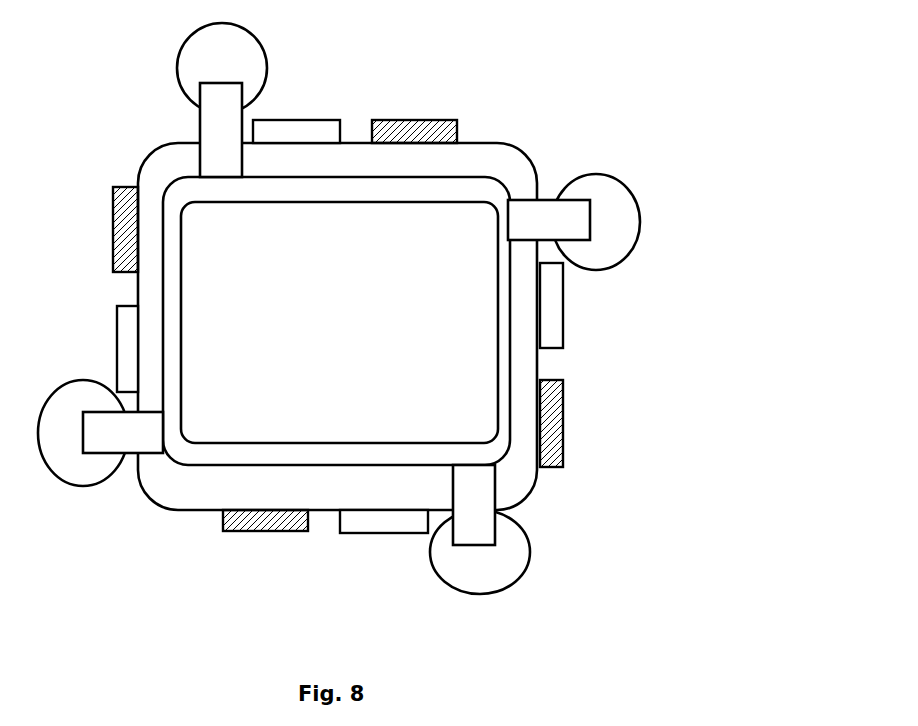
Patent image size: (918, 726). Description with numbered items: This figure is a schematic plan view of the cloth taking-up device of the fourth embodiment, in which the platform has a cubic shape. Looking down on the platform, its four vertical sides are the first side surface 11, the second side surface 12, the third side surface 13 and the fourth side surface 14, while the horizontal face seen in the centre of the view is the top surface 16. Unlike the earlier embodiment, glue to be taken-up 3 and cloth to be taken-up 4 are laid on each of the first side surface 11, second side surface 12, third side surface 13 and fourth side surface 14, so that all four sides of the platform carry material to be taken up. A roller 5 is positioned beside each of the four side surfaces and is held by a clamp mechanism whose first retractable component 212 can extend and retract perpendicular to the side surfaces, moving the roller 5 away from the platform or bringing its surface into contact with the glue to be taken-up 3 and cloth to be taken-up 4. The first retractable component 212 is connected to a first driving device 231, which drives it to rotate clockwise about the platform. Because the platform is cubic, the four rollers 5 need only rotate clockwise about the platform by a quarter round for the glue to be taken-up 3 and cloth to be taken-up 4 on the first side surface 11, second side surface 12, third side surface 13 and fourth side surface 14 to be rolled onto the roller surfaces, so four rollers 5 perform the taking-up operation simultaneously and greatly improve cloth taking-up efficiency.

The glue to be taken-up 3 is at (282, 130).
The cloth to be taken-up 4 is at (428, 118).
The roller 5 is at (62, 425).
The first side surface 11 is at (137, 290).
The second side surface 12 is at (540, 362).
The third side surface 13 is at (350, 140).
The fourth side surface 14 is at (328, 512).
The top surface 16 is at (162, 477).
The first retractable component 212 is at (538, 218).
The first driving device 231 is at (490, 447).